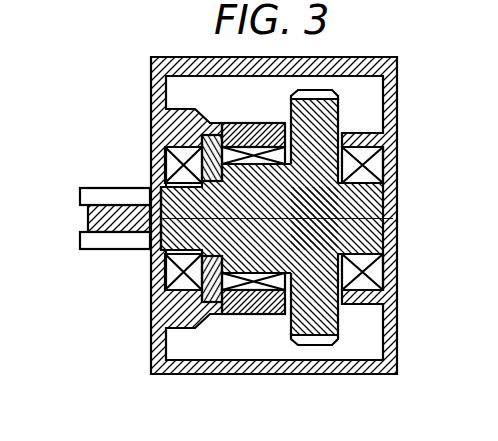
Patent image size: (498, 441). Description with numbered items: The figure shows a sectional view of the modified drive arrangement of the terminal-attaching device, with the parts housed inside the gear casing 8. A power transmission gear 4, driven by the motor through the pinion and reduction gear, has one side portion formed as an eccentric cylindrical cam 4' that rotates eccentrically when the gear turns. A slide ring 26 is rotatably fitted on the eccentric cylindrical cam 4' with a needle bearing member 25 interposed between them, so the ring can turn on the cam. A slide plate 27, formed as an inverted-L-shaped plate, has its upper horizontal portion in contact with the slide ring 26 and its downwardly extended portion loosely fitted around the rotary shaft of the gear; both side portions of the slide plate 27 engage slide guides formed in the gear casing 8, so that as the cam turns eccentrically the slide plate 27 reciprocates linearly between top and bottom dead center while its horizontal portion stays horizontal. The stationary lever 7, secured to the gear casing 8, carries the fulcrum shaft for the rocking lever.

The power transmission gear 4 is at (331, 212).
The eccentric cylindrical cam 4' is at (277, 256).
The stationary lever 7 is at (87, 240).
The gear casing 8 is at (160, 347).
The needle bearing member 25 is at (239, 123).
The slide ring 26 is at (268, 148).
The slide plate 27 is at (216, 134).